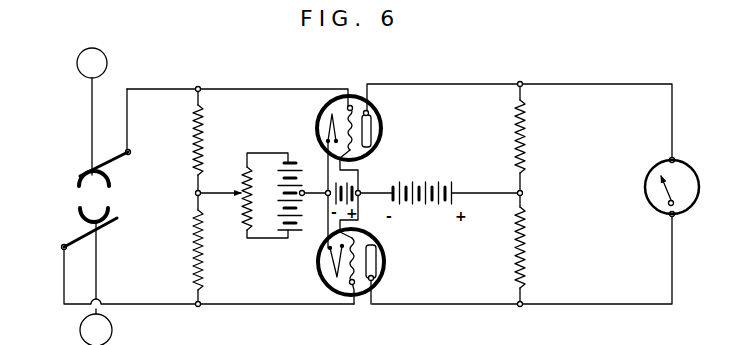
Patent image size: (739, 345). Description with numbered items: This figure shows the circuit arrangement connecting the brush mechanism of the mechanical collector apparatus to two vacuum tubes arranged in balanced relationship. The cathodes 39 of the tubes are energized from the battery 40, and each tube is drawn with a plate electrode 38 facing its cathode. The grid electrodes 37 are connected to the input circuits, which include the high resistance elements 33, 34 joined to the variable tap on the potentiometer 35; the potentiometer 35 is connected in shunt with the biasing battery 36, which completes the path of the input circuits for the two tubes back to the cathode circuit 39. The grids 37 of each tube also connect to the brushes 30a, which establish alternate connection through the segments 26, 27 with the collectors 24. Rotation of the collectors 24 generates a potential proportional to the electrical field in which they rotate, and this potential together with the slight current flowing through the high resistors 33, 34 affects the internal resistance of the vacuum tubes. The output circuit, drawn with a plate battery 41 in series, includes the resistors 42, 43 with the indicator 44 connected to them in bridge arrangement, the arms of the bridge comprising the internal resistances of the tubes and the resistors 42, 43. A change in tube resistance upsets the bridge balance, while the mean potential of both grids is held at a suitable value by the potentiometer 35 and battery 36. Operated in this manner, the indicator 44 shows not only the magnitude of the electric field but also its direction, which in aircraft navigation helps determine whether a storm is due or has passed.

The collector 24 is at (80, 64).
The segment 26 is at (78, 184).
The segment 27 is at (80, 226).
The brush 30a is at (111, 243).
The resistance element 33 is at (191, 150).
The resistance element 34 is at (191, 264).
The potentiometer 35 is at (242, 172).
The biasing battery 36 is at (276, 172).
The grid electrode 37 is at (353, 105).
The plate 38 is at (368, 130).
The cathode 39 is at (330, 122).
The battery 40 is at (350, 176).
The plate battery 41 is at (433, 170).
The resistor 42 is at (531, 112).
The resistor 43 is at (512, 260).
The indicator 44 is at (683, 173).